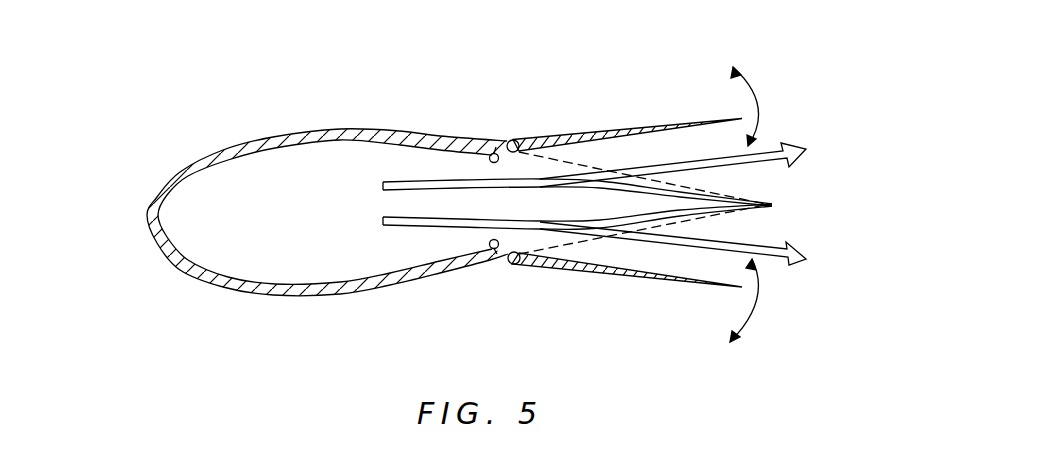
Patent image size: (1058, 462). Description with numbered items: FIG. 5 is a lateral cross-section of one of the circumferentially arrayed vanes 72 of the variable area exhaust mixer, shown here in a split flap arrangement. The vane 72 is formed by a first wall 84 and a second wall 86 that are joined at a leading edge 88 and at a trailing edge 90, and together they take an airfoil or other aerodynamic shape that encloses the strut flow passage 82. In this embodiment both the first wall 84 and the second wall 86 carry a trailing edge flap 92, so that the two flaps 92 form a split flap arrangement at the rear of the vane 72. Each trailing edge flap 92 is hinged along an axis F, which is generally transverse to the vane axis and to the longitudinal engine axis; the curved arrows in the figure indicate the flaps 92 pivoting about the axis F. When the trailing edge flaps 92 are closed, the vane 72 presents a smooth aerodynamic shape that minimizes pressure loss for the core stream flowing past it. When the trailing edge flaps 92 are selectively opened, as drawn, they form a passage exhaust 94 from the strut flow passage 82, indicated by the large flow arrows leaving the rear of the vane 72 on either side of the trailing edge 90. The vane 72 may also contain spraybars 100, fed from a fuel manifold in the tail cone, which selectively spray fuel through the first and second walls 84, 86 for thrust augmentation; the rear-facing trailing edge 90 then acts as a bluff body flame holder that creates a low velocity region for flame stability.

The vane 72 is at (567, 84).
The strut flow passage 82 is at (338, 218).
The first wall 84 is at (372, 127).
The second wall 86 is at (325, 298).
The leading edge 88 is at (152, 208).
The trailing edge 90 is at (752, 193).
The trailing edge flap 92 is at (690, 118).
The passage exhaust 94 is at (735, 233).
The spraybar 100 is at (494, 140).
The axis F is at (520, 140).